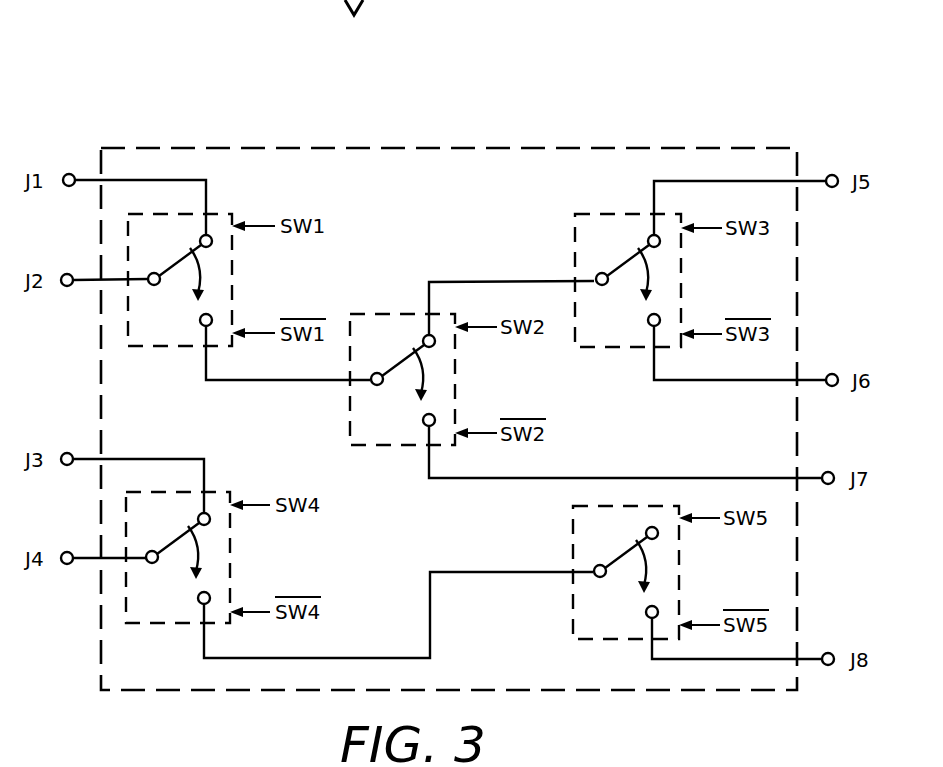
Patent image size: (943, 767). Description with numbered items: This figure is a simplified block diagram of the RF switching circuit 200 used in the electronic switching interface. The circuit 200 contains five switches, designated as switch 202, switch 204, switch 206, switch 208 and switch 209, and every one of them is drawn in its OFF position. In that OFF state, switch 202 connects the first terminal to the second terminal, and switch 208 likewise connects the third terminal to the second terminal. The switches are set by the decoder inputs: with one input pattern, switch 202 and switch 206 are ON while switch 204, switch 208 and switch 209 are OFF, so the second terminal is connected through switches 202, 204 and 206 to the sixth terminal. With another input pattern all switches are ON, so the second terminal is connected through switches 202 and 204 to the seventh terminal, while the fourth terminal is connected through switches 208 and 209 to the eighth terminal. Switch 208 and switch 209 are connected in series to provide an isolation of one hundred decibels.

The switching circuit 200 is at (113, 140).
The switch S1 202 is at (177, 327).
The switch S2 204 is at (378, 330).
The switch S3 206 is at (626, 333).
The switch S4 208 is at (221, 553).
The switch S5 209 is at (578, 528).